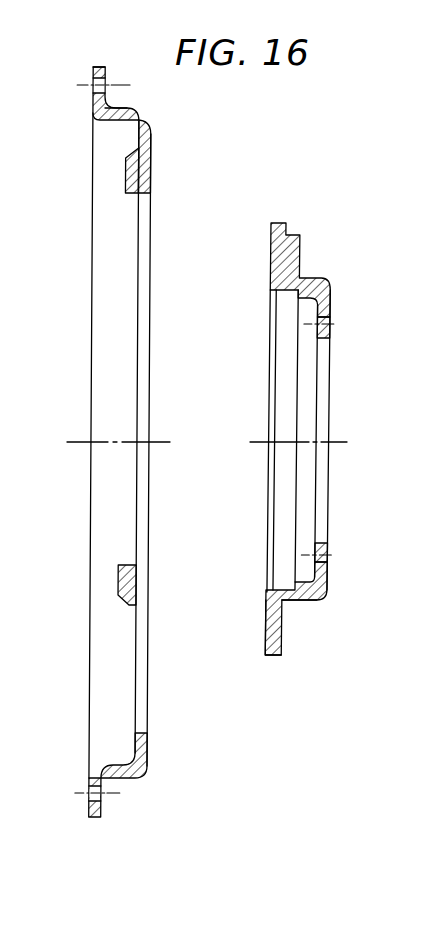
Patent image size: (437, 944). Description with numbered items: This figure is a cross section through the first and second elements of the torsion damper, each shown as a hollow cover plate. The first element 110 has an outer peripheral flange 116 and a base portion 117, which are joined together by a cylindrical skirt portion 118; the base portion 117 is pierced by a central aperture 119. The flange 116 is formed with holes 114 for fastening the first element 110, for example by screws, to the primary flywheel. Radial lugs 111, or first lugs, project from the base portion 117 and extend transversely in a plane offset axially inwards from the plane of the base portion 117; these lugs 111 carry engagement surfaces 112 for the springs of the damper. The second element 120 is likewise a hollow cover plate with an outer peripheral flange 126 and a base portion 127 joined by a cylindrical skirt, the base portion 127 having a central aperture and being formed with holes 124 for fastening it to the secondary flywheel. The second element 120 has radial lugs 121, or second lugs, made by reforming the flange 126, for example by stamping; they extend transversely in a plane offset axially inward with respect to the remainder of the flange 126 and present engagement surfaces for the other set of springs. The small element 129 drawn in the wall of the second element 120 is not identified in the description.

The first element 110 is at (134, 426).
The radial lugs 111 is at (131, 170).
The engagement surfaces 112 is at (127, 585).
The holes 114 is at (103, 85).
The outer peripheral flange 116 is at (108, 74).
The base portion 117 is at (152, 139).
The cylindrical skirt portion 118 is at (125, 106).
The central aperture 119 is at (111, 775).
The second element 120 is at (341, 437).
The radial lugs 121 is at (300, 270).
The holes 124 is at (319, 327).
The outer peripheral flange 126 is at (273, 627).
The base portion 127 is at (296, 608).
The sealing ring 129 is at (316, 552).